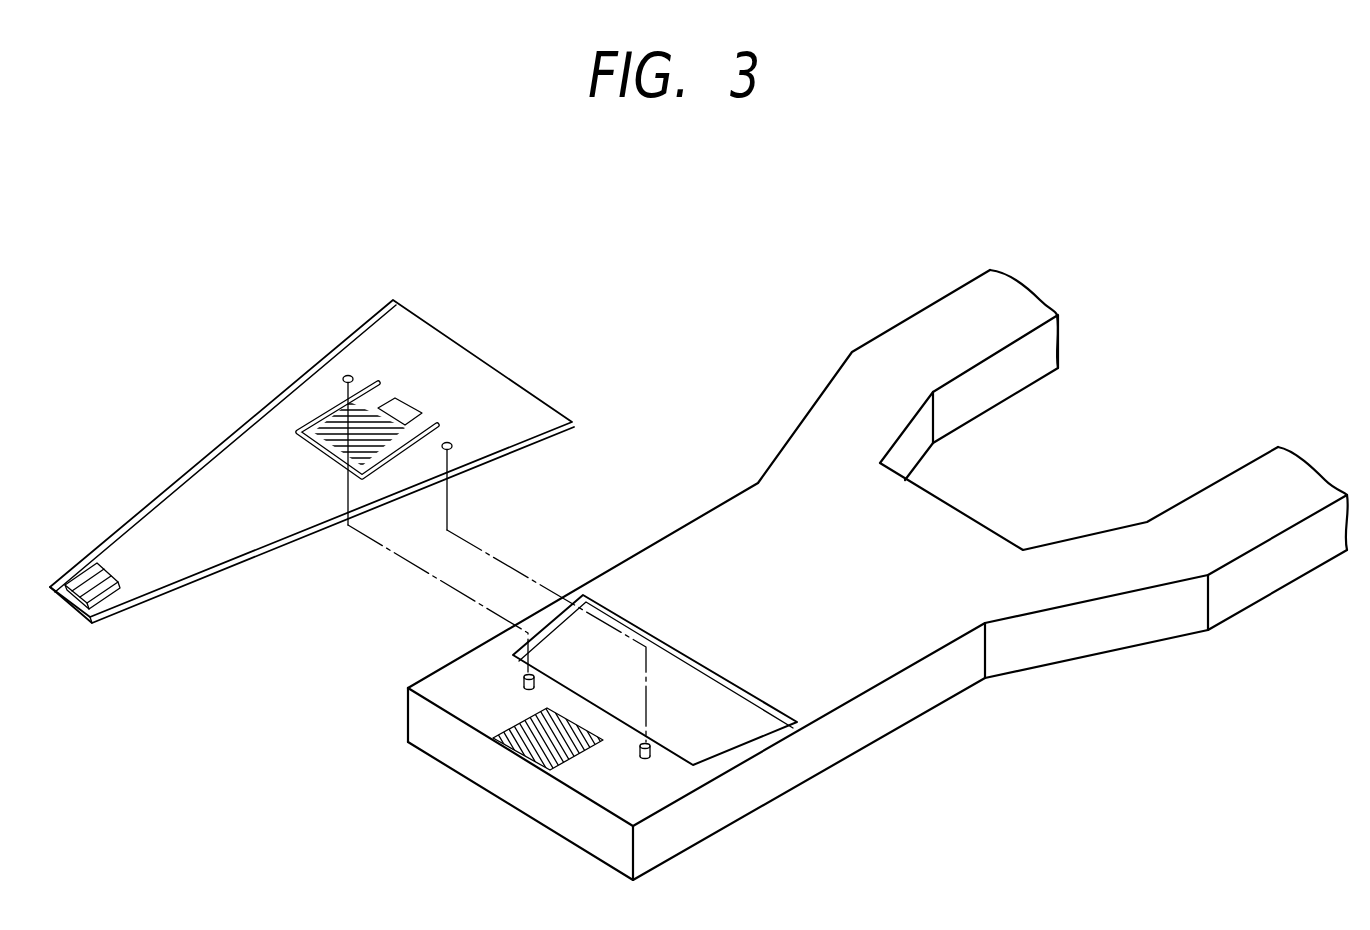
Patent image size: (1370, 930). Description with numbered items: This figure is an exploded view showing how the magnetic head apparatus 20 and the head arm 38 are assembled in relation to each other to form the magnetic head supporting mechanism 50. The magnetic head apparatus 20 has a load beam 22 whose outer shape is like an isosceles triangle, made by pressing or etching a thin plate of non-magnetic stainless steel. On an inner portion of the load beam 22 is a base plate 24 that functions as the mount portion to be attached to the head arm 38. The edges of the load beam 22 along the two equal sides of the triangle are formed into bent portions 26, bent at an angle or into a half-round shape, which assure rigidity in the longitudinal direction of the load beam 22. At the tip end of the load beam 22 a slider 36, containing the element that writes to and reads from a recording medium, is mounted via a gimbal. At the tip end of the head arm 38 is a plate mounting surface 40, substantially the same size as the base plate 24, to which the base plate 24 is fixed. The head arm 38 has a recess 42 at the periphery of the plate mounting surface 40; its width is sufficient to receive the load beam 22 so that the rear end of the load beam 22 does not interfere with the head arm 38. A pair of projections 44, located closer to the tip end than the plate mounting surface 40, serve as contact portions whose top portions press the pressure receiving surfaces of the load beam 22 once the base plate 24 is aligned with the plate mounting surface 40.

The magnetic head apparatus 20 is at (301, 466).
The load beam 22 is at (427, 347).
The base plate 24 is at (395, 436).
The bent portions 26 is at (240, 424).
The slider 36 is at (85, 573).
The head arm 38 is at (948, 525).
The plate mounting surface 40 is at (590, 712).
The recess 42 is at (650, 642).
The projections 44 is at (533, 679).
The magnetic head supporting mechanism 50 is at (693, 362).